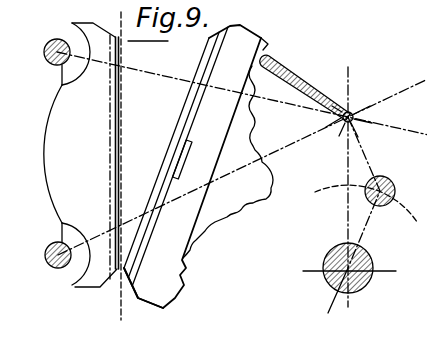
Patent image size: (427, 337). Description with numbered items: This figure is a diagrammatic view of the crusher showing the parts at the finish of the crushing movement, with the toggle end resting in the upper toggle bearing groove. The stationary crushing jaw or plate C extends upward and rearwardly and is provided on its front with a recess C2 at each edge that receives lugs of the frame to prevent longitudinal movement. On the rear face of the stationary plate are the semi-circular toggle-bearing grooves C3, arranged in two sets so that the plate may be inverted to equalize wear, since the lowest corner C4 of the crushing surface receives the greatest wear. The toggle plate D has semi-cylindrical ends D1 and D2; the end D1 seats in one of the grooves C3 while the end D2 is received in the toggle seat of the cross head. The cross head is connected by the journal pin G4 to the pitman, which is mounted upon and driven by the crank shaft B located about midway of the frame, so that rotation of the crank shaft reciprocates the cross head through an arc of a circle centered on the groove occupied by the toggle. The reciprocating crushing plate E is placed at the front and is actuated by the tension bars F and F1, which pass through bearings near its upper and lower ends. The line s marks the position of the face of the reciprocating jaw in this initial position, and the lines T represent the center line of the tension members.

The reciprocating crushing plate E is at (81, 155).
The tension bar F is at (50, 43).
The tension bar F1 is at (45, 257).
The line S S s is at (120, 167).
The line T T is at (175, 85).
The stationary crushing jaw or plate C is at (199, 166).
The recess C2 is at (208, 42).
The toggle-bearing grooves C3 is at (249, 117).
The lowest corner of the crushing surface C4 is at (122, 263).
The semi-cylindrical end of the toggle plate D1 is at (269, 52).
The toggle plate D is at (312, 86).
The semi-cylindrical end of the toggle plate D2 is at (350, 111).
The journal pin G4 is at (393, 186).
The crank shaft B is at (324, 256).